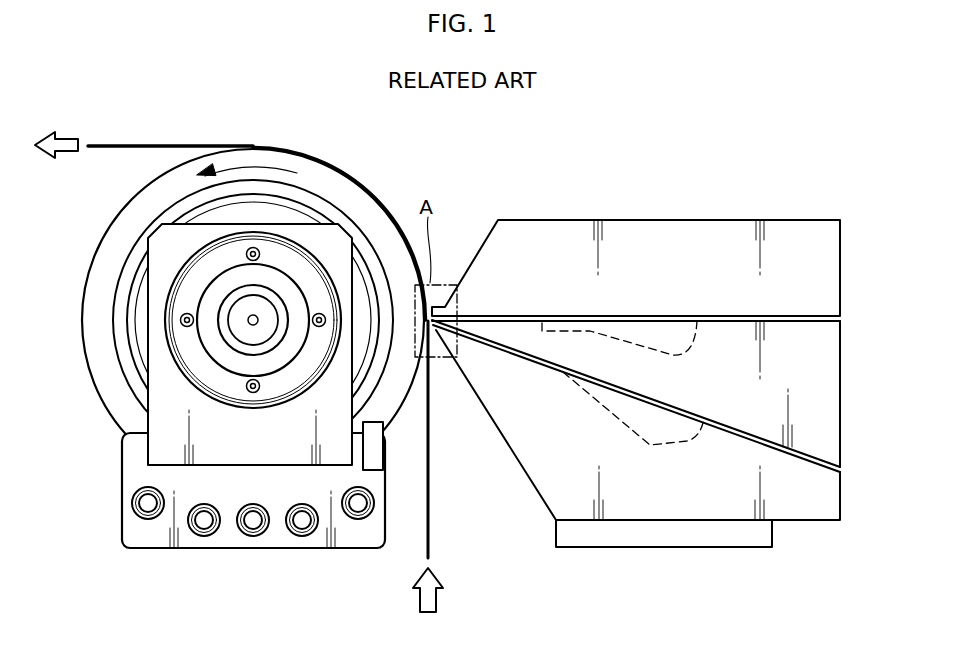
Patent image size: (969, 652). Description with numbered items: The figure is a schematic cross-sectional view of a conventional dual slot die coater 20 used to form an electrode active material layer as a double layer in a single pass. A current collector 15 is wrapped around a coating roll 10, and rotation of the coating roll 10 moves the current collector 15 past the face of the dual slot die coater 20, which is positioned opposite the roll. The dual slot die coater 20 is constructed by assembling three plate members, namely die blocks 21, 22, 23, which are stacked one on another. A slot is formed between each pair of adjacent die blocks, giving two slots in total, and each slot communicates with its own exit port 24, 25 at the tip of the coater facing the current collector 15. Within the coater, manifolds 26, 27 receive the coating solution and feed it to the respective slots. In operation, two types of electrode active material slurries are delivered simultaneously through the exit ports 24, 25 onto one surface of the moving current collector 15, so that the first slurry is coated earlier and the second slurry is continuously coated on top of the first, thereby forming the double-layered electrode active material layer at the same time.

The coating roll 10 is at (82, 320).
The current collector 15 is at (431, 508).
The dual slot die coater 20 is at (661, 373).
The die block 21 is at (833, 493).
The die block 22 is at (833, 387).
The die block 23 is at (833, 268).
The exit port 24 is at (470, 332).
The exit port 25 is at (472, 318).
The manifold 26 is at (655, 448).
The manifold 27 is at (675, 357).